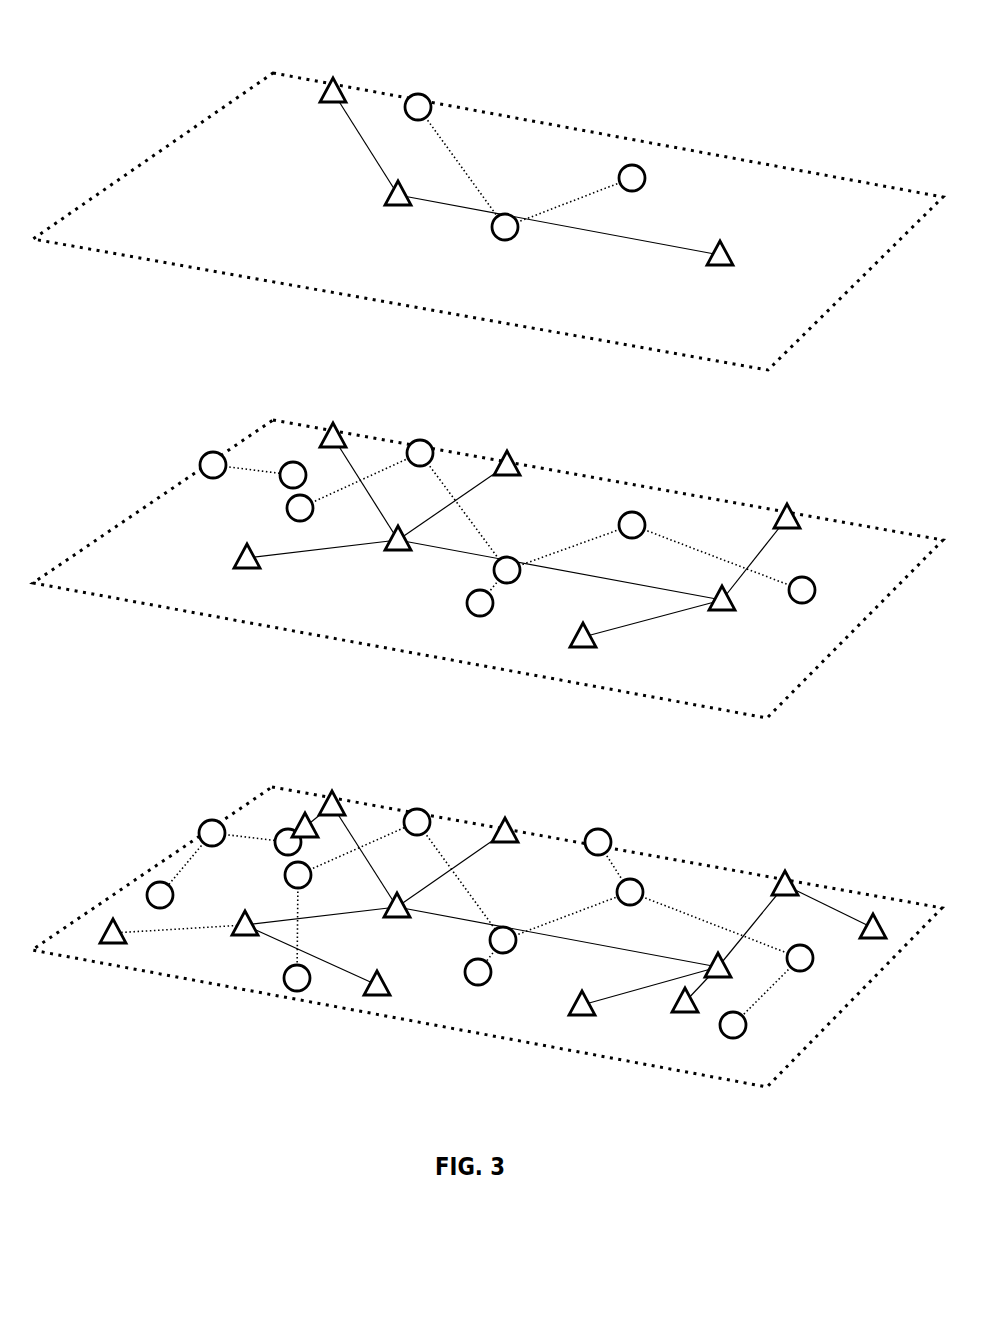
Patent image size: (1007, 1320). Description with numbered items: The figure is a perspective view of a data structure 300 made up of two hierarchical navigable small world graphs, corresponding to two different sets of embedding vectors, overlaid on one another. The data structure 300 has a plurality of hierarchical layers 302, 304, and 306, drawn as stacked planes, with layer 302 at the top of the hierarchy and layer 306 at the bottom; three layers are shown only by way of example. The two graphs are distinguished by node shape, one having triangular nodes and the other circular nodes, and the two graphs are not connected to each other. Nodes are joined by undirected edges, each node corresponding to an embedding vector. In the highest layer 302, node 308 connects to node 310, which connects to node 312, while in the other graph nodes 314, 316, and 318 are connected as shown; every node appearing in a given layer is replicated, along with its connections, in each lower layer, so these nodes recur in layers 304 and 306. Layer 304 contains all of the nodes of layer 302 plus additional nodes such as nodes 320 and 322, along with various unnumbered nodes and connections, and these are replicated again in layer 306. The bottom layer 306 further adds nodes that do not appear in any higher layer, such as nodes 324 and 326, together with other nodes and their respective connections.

The data structure 300 is at (158, 95).
The hierarchical layer 302 is at (843, 297).
The hierarchical layer 304 is at (825, 662).
The hierarchical layer 306 is at (827, 1023).
The node 308 is at (721, 617).
The node 310 is at (400, 558).
The node 312 is at (322, 446).
The node 314 is at (643, 534).
The node 316 is at (517, 585).
The node 318 is at (418, 472).
The node 320 is at (775, 700).
The node 322 is at (814, 774).
The node 324 is at (679, 1009).
The node 326 is at (747, 1026).